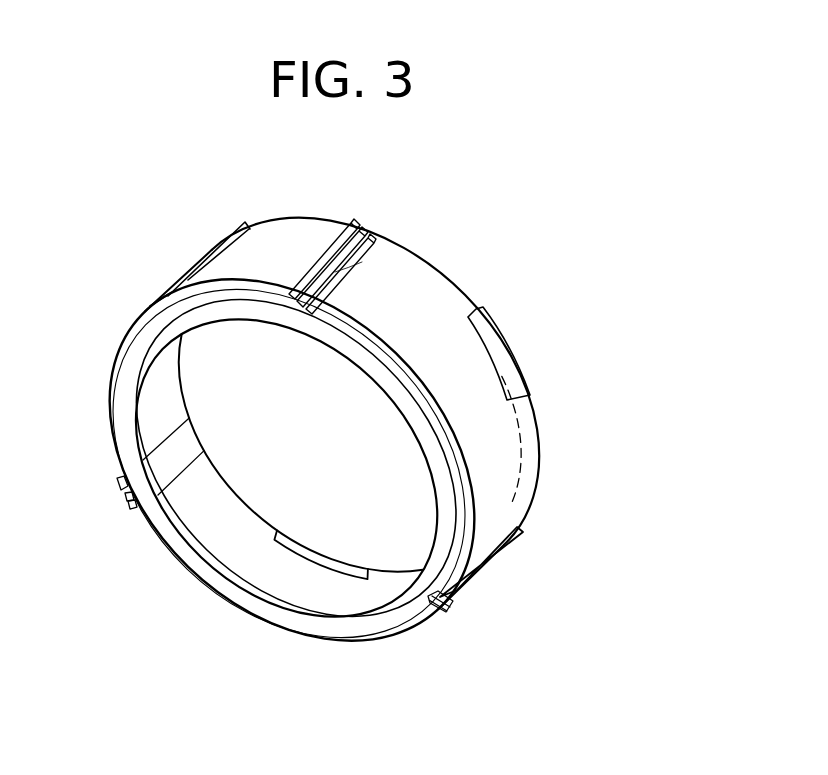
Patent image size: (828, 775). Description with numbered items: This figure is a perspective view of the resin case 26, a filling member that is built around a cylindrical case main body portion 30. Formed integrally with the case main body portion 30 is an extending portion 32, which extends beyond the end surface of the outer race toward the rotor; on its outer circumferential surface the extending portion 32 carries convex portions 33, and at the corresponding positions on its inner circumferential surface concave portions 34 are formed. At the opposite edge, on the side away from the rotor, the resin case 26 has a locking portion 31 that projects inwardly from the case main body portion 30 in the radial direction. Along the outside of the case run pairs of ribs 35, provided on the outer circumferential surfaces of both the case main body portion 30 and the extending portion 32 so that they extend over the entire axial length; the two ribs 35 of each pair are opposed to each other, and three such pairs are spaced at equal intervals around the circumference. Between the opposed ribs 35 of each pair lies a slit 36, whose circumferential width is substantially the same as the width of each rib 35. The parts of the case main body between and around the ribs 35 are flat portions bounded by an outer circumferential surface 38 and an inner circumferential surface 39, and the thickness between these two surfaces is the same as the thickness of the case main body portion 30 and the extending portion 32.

The resin case 26 is at (590, 262).
The case main body portion 30 is at (387, 290).
The locking portion 31 is at (178, 557).
The extending portion 32 is at (527, 418).
The convex portions 33 is at (200, 260).
The concave portions 34 is at (313, 560).
The ribs 35 is at (352, 220).
The slit 36 is at (363, 228).
The outer circumferential surface 38 is at (357, 263).
The inner circumferential surface 39 is at (190, 440).